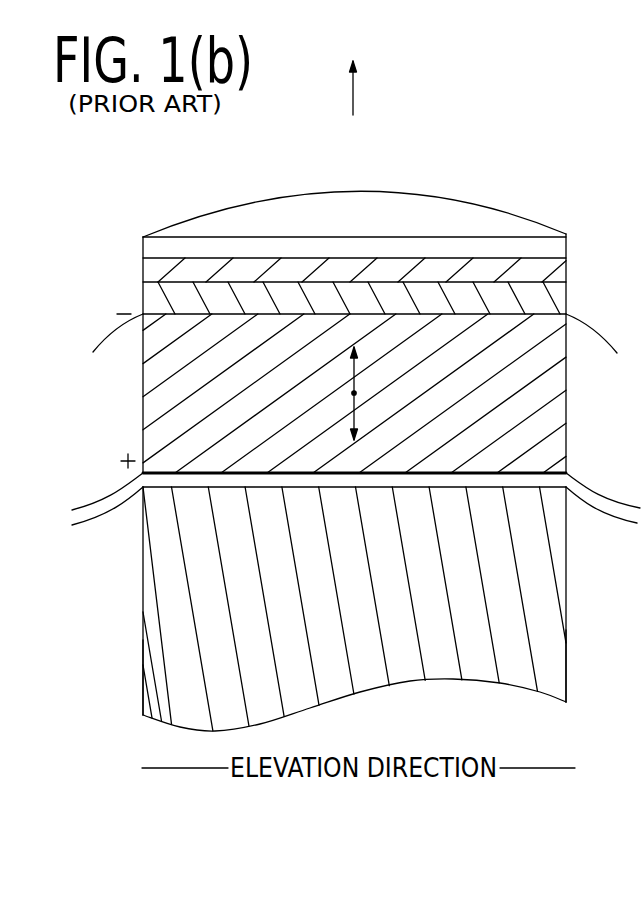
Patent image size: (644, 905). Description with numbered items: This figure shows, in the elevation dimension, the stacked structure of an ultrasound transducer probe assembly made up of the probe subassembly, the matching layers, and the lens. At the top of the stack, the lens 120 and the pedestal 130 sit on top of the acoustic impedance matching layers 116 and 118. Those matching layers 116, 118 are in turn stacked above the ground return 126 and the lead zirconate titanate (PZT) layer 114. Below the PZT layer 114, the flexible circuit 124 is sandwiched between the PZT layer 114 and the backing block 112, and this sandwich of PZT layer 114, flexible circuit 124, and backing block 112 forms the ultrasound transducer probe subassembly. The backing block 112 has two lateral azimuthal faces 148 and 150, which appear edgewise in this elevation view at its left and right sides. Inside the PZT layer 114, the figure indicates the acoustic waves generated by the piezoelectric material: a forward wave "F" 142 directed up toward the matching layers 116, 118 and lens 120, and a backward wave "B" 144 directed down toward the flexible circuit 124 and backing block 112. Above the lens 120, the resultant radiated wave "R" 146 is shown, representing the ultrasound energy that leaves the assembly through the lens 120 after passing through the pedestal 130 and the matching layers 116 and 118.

The backing block 112 is at (182, 543).
The lead zirconate titanate (PZT) layer 114 is at (178, 418).
The acoustic impedance matching layer 116 is at (158, 290).
The acoustic impedance matching layer 118 is at (535, 269).
The lens 120 is at (188, 212).
The flexible circuit 124 is at (102, 498).
The ground return 126 is at (112, 330).
The pedestal 130 is at (552, 247).
The forward wave "F" 142 is at (396, 352).
The backward wave "B" 144 is at (397, 430).
The resultant radiated wave "R" 146 is at (395, 92).
The lateral azimuthal face 148 is at (143, 662).
The lateral azimuthal face 150 is at (568, 637).